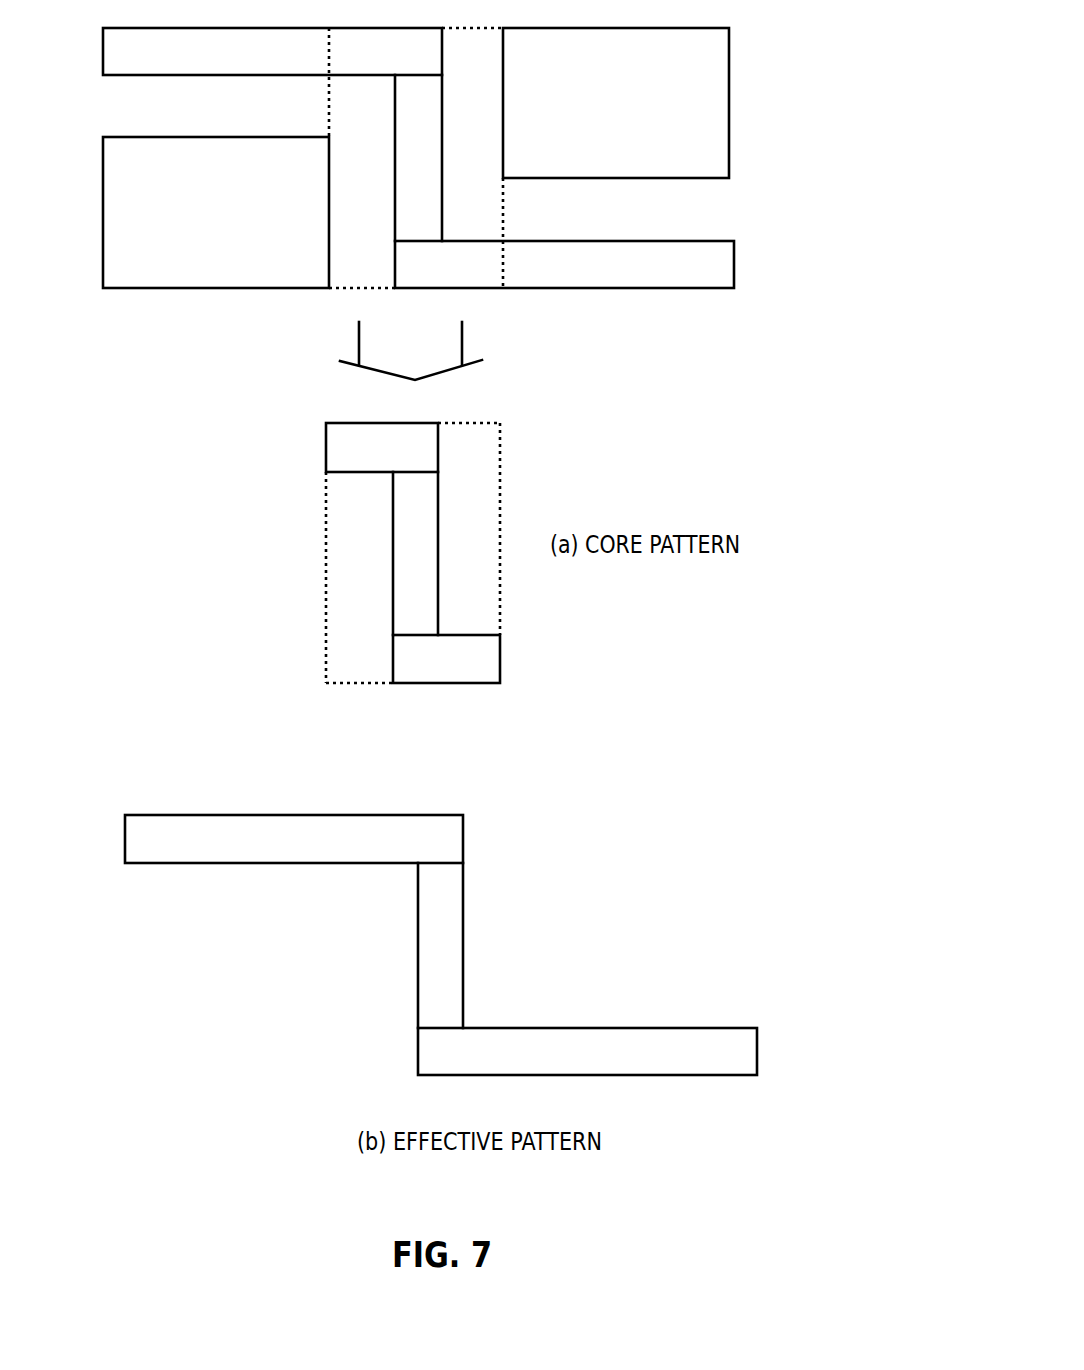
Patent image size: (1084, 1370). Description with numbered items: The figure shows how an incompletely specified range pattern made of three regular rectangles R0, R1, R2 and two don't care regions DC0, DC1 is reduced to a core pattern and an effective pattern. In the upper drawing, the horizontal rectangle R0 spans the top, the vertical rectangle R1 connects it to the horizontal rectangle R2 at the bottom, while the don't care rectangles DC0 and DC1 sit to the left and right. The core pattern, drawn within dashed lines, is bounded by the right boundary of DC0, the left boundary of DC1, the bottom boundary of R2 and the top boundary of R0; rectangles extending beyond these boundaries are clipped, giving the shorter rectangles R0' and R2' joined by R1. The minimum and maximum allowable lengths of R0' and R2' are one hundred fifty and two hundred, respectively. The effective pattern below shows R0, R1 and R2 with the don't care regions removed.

The regular rectangle R0 is at (283, 445).
The regular rectangle R1 is at (428, 551).
The regular rectangle R2 is at (576, 658).
The don't care region DC0 is at (216, 212).
The don't care region DC1 is at (616, 103).
The clipped rectangle R0' is at (382, 447).
The clipped rectangle R2' is at (446, 659).